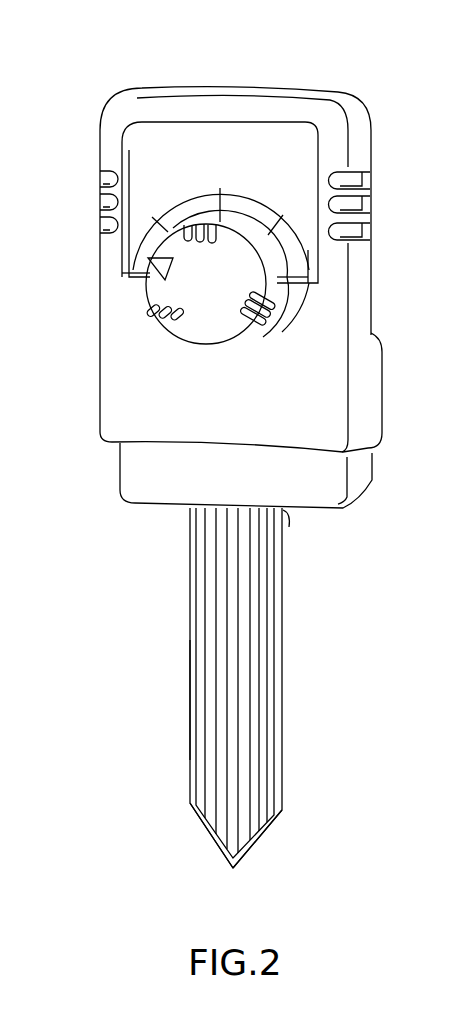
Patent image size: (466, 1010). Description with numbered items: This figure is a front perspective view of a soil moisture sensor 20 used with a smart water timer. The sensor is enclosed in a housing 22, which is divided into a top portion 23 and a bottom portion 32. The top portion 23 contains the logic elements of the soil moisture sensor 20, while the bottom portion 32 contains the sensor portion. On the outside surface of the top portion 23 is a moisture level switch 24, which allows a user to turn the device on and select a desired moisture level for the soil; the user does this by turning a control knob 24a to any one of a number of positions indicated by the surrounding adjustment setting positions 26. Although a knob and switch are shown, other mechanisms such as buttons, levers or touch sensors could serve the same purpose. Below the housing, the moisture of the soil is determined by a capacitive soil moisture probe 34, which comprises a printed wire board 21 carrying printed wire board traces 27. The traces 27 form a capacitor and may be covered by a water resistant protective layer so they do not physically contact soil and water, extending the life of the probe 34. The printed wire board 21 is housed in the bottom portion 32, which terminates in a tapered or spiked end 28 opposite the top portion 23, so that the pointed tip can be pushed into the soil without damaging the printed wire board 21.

The soil moisture sensor 20 is at (126, 58).
The housing 22 is at (357, 112).
The top portion 23 is at (90, 503).
The moisture level switch 24 is at (273, 353).
The control knob 24a is at (158, 291).
The adjustment setting positions 26 is at (296, 240).
The printed wire board 21 is at (262, 692).
The printed wire board traces 27 is at (252, 743).
The tapered or spiked end 28 is at (250, 840).
The bottom portion 32 is at (92, 880).
The capacitive soil moisture probe 34 is at (333, 647).